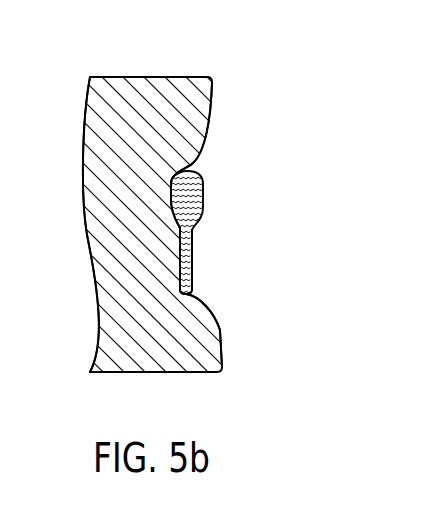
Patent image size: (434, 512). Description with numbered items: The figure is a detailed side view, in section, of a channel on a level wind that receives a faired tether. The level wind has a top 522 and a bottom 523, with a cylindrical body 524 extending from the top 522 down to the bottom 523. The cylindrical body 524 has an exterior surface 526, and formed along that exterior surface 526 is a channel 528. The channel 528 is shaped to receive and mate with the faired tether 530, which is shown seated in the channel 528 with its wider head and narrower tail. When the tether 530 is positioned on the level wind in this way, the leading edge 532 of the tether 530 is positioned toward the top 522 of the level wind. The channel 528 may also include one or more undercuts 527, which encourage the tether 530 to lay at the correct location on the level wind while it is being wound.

The top 522 is at (130, 77).
The bottom 523 is at (152, 373).
The cylindrical body 524 is at (198, 109).
The exterior surface 526 is at (223, 337).
The undercut 527 is at (178, 236).
The channel 528 is at (203, 170).
The faired tether 530 is at (200, 226).
The leading edge 532 is at (190, 168).